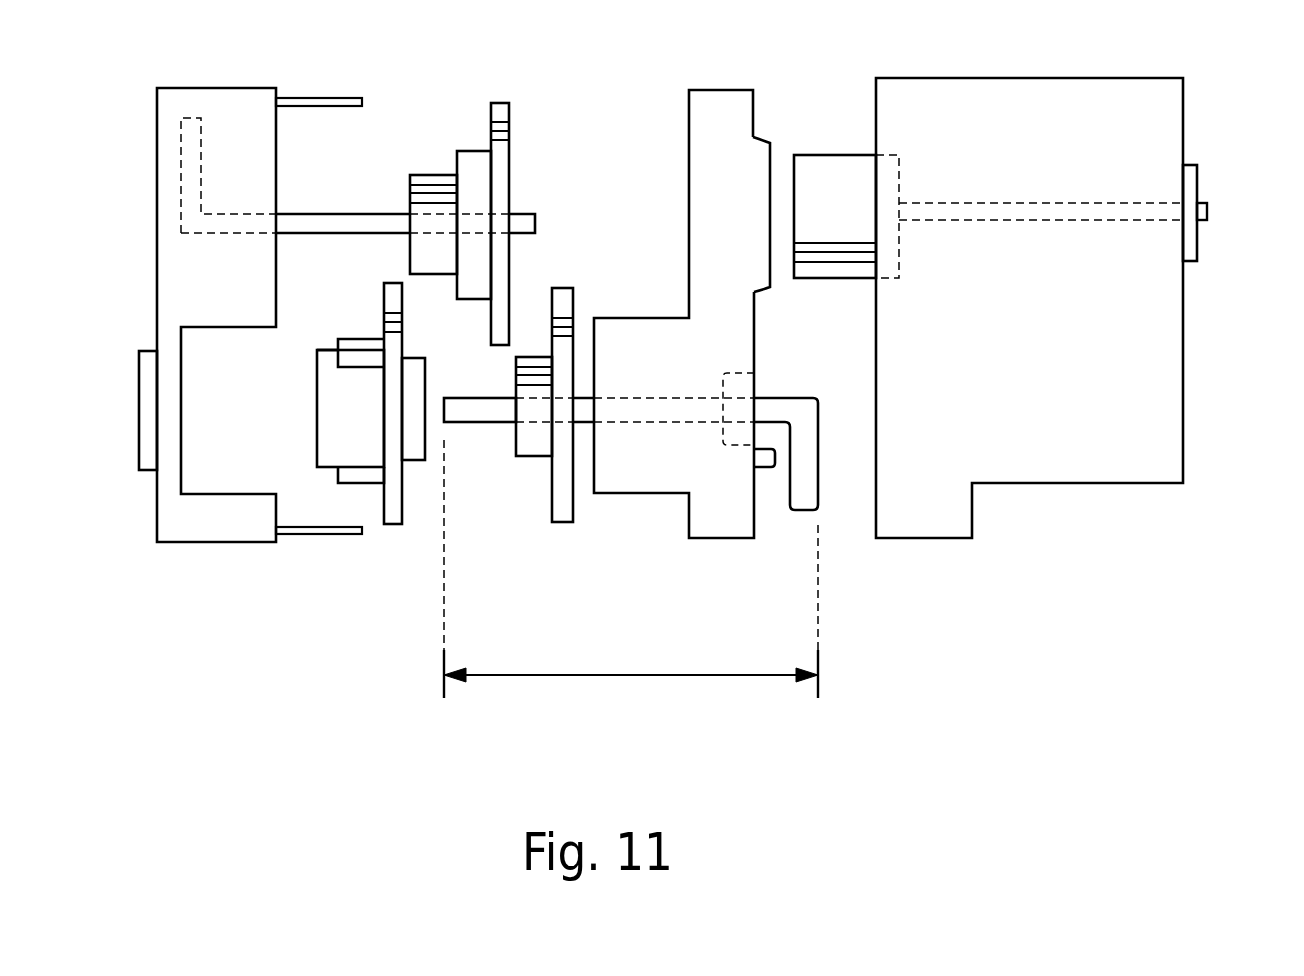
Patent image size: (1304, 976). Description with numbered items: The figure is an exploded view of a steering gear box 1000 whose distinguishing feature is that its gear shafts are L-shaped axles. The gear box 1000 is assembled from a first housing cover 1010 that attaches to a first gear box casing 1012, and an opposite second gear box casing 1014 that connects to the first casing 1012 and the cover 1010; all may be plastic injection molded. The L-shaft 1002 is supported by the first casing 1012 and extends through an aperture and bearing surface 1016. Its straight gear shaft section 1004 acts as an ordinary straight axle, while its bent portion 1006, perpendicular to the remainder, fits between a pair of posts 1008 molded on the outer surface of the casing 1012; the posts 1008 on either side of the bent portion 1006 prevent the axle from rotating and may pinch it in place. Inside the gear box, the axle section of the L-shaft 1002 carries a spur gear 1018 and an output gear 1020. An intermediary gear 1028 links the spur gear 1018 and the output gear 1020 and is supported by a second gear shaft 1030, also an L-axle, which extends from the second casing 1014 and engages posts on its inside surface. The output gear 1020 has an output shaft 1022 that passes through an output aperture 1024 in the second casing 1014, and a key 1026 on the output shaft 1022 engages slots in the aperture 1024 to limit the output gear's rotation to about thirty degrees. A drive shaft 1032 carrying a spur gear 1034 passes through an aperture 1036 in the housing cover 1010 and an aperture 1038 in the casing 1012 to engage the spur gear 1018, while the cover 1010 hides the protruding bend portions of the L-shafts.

The steering gear box 1000 is at (907, 640).
The L-shaft 1002 is at (485, 425).
The straight gear shaft section 1004 is at (631, 577).
The bent portion 1006 is at (818, 491).
The posts 1008 is at (723, 440).
The first housing cover 1010 is at (1145, 486).
The first gear box casing 1012 is at (717, 540).
The second gear box casing 1014 is at (152, 236).
The bearing surface 1016 is at (723, 380).
The spur gear 1018 is at (563, 288).
The output gear 1020 is at (395, 527).
The output shaft 1022 is at (317, 413).
The output aperture 1024 is at (139, 437).
The key 1026 is at (345, 339).
The intermediary gear 1028 is at (507, 103).
The gear shaft 1030 is at (348, 212).
The drive shaft 1032 is at (1079, 225).
The spur gear 1034 is at (858, 155).
The aperture 1036 is at (1198, 255).
The aperture 1038 is at (765, 140).